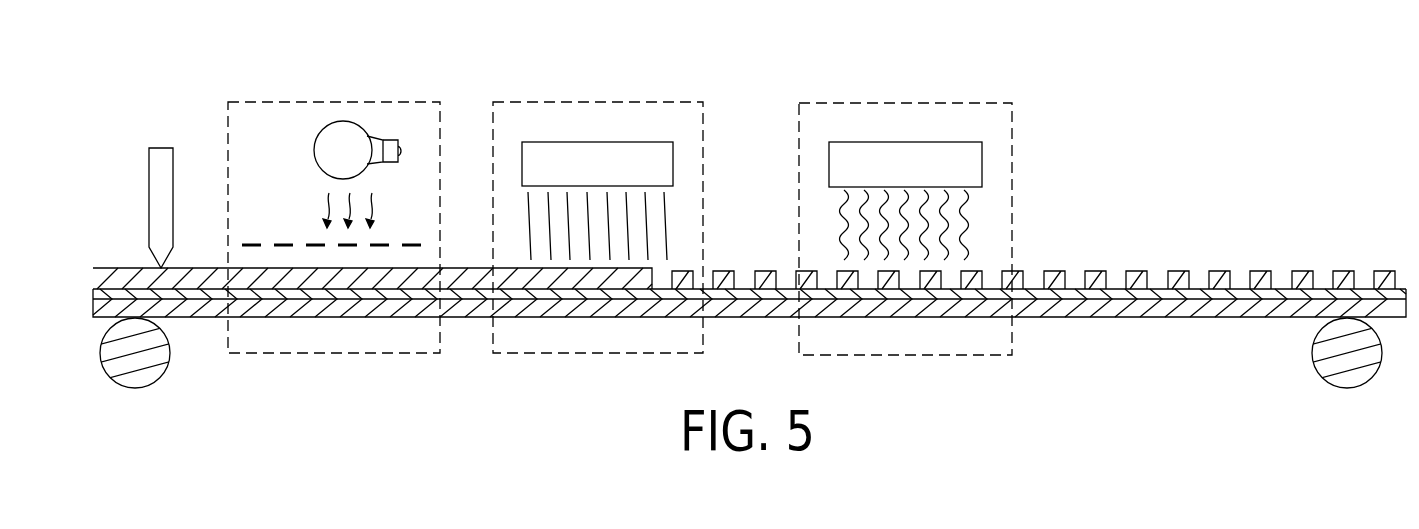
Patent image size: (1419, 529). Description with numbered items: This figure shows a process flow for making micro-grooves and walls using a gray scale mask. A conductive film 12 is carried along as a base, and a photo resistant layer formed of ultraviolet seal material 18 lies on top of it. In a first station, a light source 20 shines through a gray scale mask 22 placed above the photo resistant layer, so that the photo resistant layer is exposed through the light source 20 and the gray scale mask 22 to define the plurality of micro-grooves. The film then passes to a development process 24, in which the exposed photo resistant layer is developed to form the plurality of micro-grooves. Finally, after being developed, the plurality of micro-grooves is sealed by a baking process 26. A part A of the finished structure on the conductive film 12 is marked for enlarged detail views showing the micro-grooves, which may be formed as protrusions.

The conductive film 12 is at (778, 298).
The ultraviolet seal material 18 is at (458, 278).
The light source 20 is at (372, 131).
The gray scale mask 22 is at (272, 244).
The development process 24 is at (598, 102).
The baking process 26 is at (905, 103).
The part A is at (1112, 307).